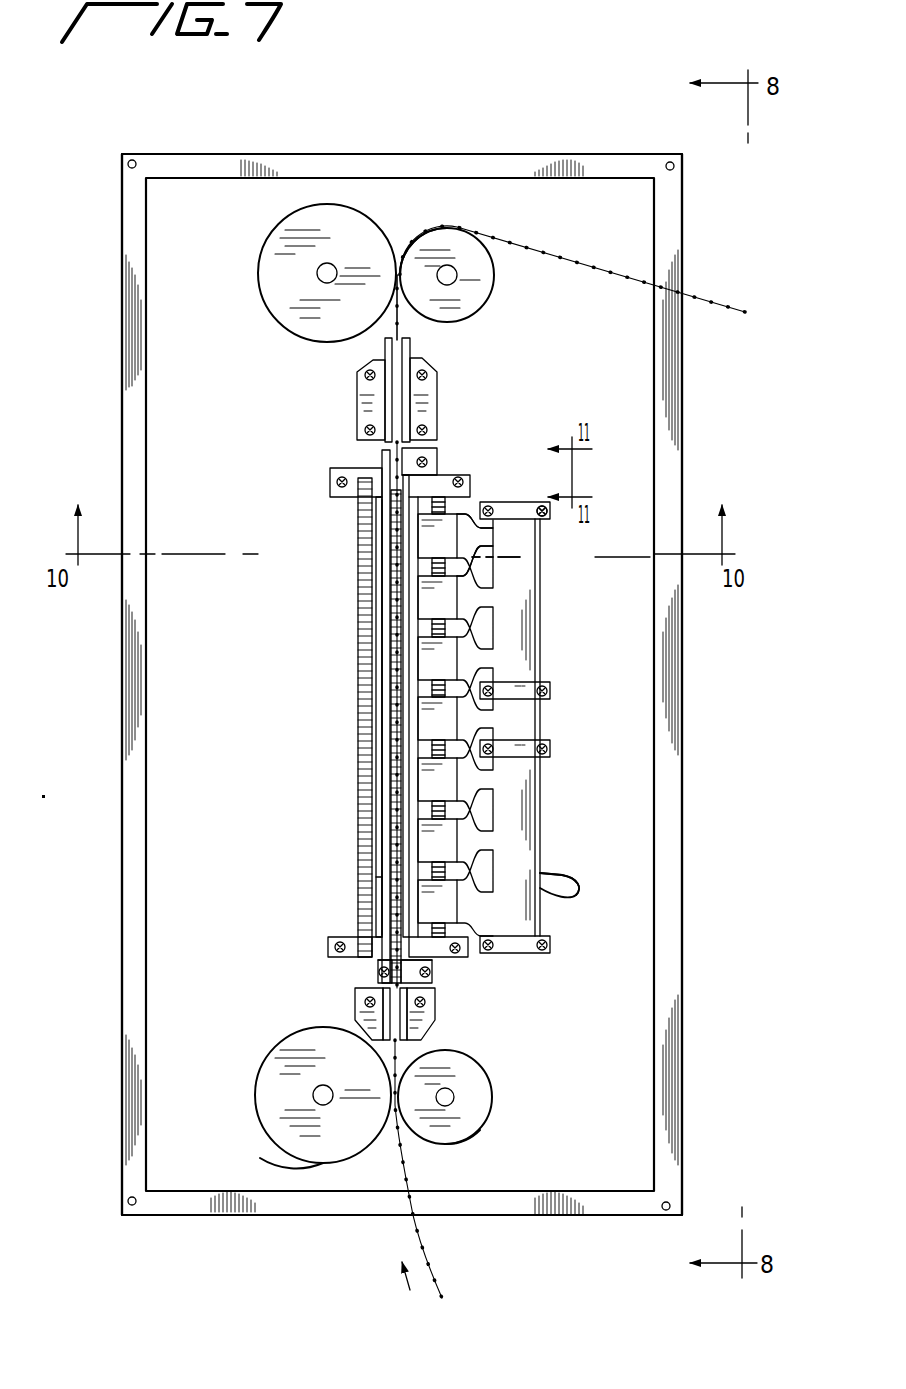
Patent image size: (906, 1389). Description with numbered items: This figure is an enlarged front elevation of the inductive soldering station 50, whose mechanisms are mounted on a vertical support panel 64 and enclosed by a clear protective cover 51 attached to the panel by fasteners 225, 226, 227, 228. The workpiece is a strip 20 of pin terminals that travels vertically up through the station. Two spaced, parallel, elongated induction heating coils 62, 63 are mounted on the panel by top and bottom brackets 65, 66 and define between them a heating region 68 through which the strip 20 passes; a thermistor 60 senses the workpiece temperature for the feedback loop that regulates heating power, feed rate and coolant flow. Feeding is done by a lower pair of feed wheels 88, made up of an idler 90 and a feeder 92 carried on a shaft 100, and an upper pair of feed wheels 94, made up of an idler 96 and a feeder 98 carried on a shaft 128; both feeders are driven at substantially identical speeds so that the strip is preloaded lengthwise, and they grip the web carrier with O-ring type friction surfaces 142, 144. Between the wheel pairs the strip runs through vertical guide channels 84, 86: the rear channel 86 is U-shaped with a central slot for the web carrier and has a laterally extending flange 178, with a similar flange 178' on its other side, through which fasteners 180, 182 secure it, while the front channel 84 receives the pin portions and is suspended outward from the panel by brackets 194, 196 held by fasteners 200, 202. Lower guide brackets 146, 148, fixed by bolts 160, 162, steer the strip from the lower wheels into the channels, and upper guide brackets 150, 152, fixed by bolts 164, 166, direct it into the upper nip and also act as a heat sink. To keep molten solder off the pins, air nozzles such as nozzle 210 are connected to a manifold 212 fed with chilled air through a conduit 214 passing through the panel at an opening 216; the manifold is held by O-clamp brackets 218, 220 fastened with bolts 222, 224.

The strip of terminals 20 is at (620, 278).
The soldering station 50 is at (700, 677).
The clear protective cover 51 is at (656, 797).
The thermistor 60 is at (330, 950).
The induction heating coil 62 is at (358, 656).
The induction heating coil 63 is at (438, 630).
The vertical support panel 64 is at (684, 722).
The top bracket 65 is at (330, 482).
The bottom bracket 66 is at (345, 938).
The heating region 68 is at (372, 877).
The guide channel 84 is at (378, 555).
The guide channel 86 is at (384, 514).
The lower pair of feed wheels 88 is at (290, 1158).
The idler 90 is at (268, 1093).
The feeder 92 is at (482, 1110).
The upper pair of feed wheels 94 is at (398, 238).
The idler 96 is at (280, 278).
The feeder 98 is at (488, 292).
The shaft 100 is at (455, 1097).
The shaft 128 is at (448, 268).
The O-ring type friction surface 142 is at (468, 1136).
The O-ring type friction surface 144 is at (497, 260).
The lower guide bracket 146 is at (440, 1042).
The lower guide bracket 148 is at (360, 1018).
The upper guide bracket 150 is at (438, 392).
The upper guide bracket 152 is at (357, 400).
The bolt 160 is at (436, 1028).
The bolt 162 is at (354, 999).
The bolt 164 is at (412, 363).
The bolt 166 is at (384, 366).
The laterally extending flange 178 is at (339, 736).
The flange 178' is at (341, 706).
The fastener 180 is at (378, 972).
The fastener 182 is at (380, 452).
The bracket 194 is at (432, 968).
The bracket 196 is at (438, 452).
The fastener 200 is at (432, 988).
The fastener 202 is at (428, 462).
The air nozzle 210 is at (448, 533).
The manifold 212 is at (532, 717).
The conduit 214 is at (562, 875).
The opening 216 is at (582, 886).
The O-clamp bracket 218 is at (547, 514).
The O-clamp bracket 220 is at (548, 942).
The bolt 222 is at (487, 506).
The bolt 224 is at (534, 553).
The fastener 225 is at (670, 1203).
The fastener 226 is at (130, 1205).
The fastener 227 is at (130, 160).
The fastener 228 is at (669, 162).